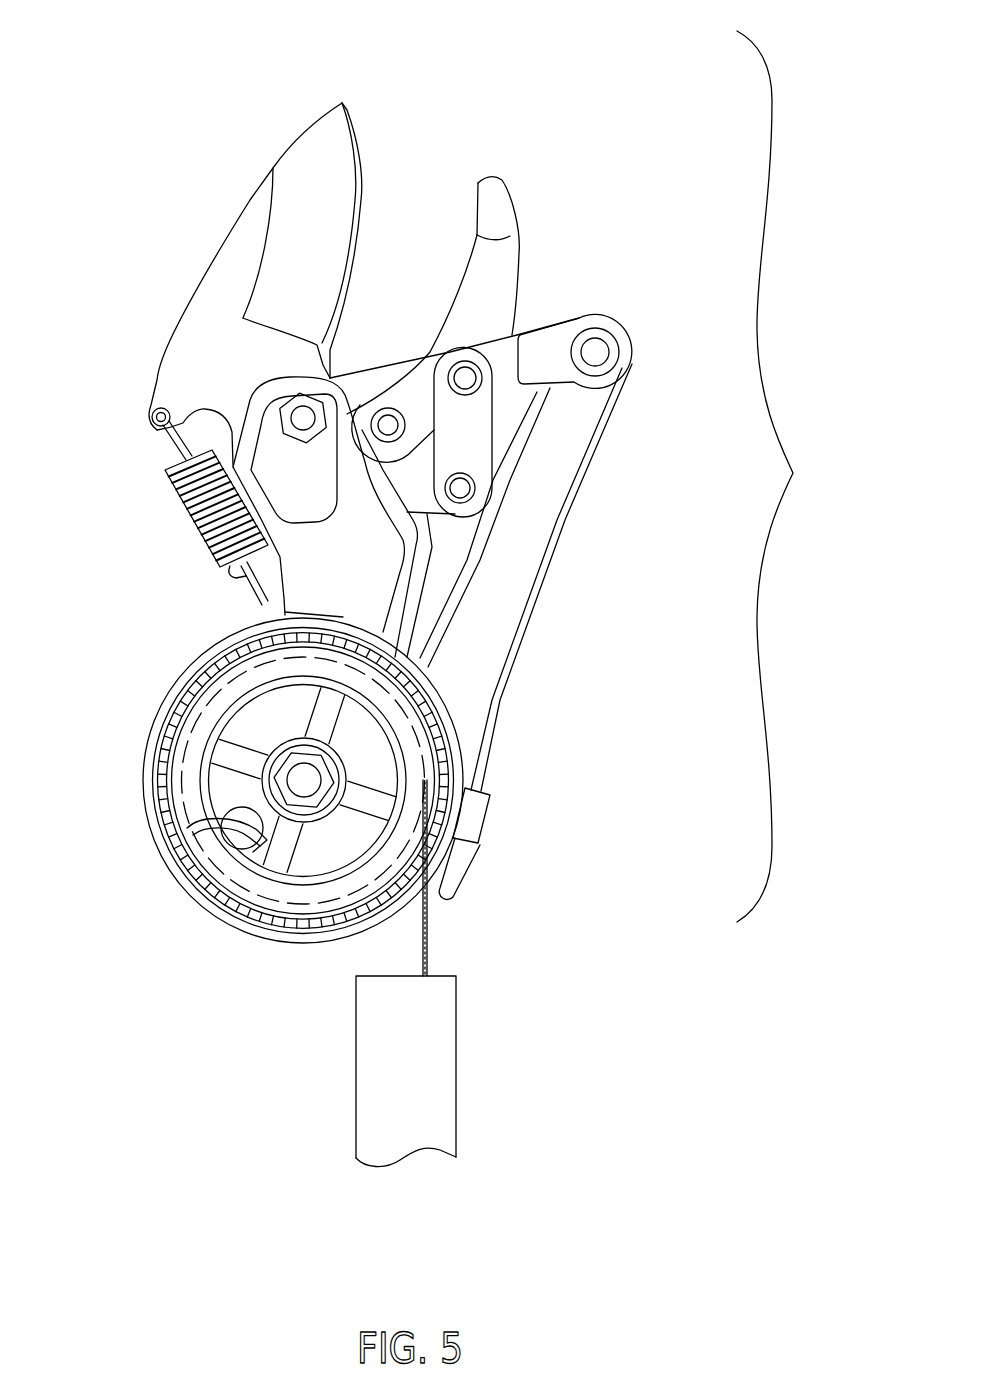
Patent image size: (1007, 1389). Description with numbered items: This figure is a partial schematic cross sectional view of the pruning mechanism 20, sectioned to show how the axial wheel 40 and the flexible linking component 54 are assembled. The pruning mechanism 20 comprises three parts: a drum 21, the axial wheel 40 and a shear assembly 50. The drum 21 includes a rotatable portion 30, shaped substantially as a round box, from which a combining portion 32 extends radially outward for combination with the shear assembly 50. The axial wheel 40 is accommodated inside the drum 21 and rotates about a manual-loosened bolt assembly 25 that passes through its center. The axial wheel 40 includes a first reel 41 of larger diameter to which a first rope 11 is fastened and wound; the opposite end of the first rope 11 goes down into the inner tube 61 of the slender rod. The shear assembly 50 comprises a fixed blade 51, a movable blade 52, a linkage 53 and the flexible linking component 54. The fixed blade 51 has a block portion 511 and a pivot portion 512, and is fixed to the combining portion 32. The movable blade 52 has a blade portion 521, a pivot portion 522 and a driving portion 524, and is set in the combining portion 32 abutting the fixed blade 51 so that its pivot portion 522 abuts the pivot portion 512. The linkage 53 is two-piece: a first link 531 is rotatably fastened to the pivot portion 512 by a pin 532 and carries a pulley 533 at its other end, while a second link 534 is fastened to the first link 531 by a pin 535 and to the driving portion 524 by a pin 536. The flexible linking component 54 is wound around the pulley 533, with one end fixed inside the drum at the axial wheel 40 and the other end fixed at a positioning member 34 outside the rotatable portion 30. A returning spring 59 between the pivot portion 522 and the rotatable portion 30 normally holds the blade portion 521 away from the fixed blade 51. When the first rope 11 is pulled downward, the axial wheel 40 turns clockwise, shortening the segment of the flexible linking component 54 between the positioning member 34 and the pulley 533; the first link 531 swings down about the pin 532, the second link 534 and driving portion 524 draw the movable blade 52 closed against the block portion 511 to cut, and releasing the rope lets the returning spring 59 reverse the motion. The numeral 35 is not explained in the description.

The shear assembly 50 is at (307, 90).
The fixed blade 51 is at (491, 148).
The block portion 511 is at (507, 235).
The pivot portion 512 is at (371, 376).
The movable blade 52 is at (247, 217).
The blade portion 521 is at (360, 193).
The pivot portion 522 is at (167, 388).
The linkage 53 is at (623, 303).
The first link 531 is at (512, 347).
The pin 532 is at (390, 422).
The pulley 533 is at (633, 337).
The second link 534 is at (488, 443).
The pin 535 is at (468, 382).
The pin 536 is at (462, 490).
The driving portion 524 is at (420, 497).
The flexible linking component 54 is at (528, 623).
The returning spring 59 is at (193, 520).
The combining portion 32 is at (330, 578).
The drum 21 is at (154, 683).
The rotatable portion 30 is at (165, 765).
The axial wheel 40 is at (407, 733).
The first reel 41 is at (433, 757).
The manual-loosened bolt assembly 25 is at (307, 783).
The pawl 35 is at (178, 830).
The positioning member 34 is at (475, 825).
The first rope 11 is at (428, 937).
The inner tube 61 is at (442, 1062).
The pruning mechanism 20 is at (782, 476).